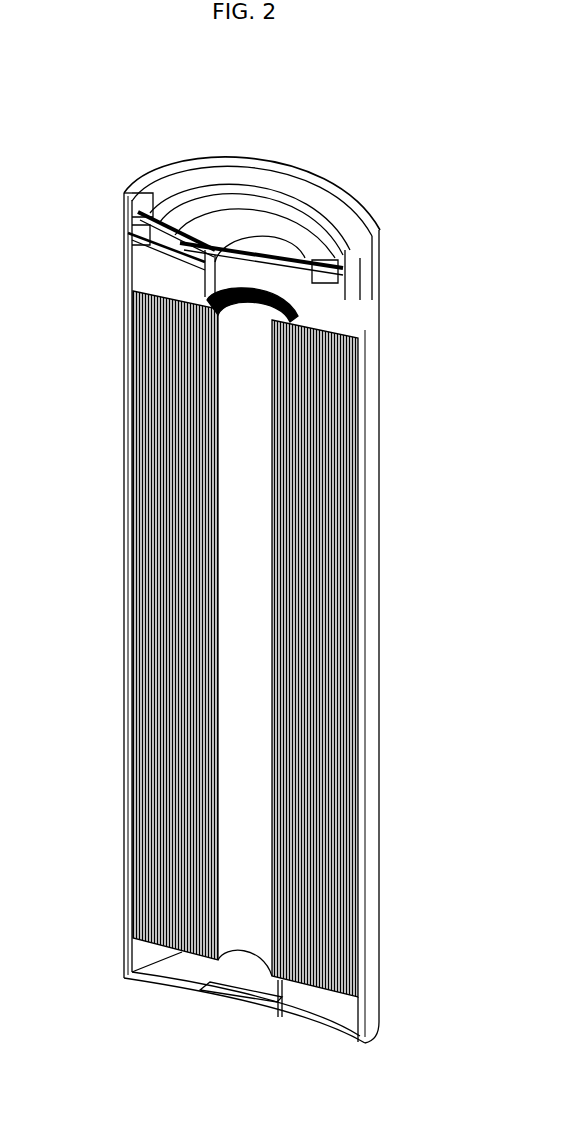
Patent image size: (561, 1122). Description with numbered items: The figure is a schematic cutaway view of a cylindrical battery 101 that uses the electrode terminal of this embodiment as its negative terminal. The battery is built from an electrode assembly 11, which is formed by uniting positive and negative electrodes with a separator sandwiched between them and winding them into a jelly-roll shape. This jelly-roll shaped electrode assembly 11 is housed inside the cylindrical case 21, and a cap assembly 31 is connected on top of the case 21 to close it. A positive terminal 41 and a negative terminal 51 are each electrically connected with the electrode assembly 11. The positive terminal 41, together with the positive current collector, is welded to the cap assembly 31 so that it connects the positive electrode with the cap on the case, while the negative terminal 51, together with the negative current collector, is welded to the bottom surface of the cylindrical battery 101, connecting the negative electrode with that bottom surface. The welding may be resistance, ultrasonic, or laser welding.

The cylindrical battery 101 is at (160, 152).
The electrode assembly 11 is at (135, 597).
The cylindrical case 21 is at (372, 793).
The cap assembly 31 is at (251, 190).
The positive terminal 41 is at (210, 262).
The negative terminal 51 is at (290, 1000).